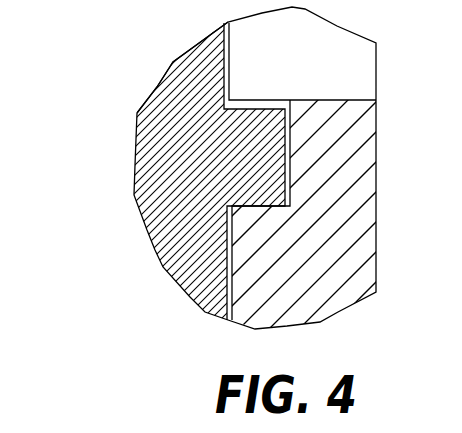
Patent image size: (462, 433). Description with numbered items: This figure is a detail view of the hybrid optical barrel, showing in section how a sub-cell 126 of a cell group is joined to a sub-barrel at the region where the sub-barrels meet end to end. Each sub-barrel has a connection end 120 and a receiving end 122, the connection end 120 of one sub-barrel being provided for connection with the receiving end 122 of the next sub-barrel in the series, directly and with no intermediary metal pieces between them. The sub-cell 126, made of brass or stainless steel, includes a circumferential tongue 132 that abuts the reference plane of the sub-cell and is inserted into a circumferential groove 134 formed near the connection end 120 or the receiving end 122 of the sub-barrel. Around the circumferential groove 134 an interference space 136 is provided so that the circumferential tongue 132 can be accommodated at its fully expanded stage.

The connection end 120 is at (358, 119).
The receiving end 122 is at (357, 66).
The sub-cell 126 is at (168, 93).
The circumferential tongue 132 is at (210, 178).
The circumferential groove 134 is at (292, 173).
The interference space 136 is at (258, 103).